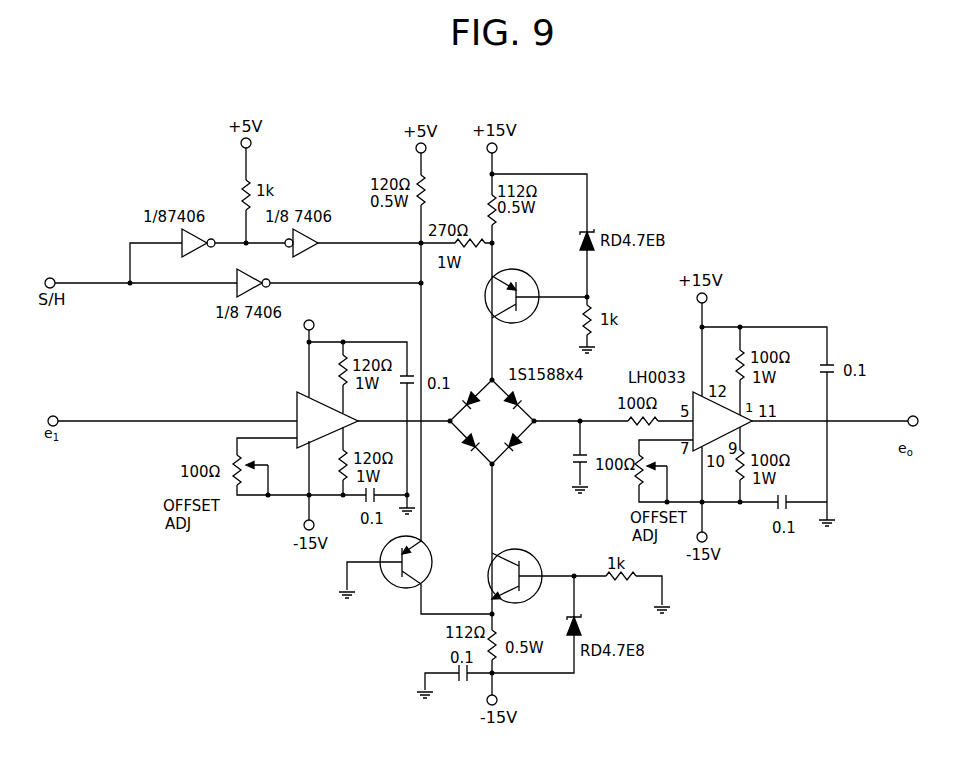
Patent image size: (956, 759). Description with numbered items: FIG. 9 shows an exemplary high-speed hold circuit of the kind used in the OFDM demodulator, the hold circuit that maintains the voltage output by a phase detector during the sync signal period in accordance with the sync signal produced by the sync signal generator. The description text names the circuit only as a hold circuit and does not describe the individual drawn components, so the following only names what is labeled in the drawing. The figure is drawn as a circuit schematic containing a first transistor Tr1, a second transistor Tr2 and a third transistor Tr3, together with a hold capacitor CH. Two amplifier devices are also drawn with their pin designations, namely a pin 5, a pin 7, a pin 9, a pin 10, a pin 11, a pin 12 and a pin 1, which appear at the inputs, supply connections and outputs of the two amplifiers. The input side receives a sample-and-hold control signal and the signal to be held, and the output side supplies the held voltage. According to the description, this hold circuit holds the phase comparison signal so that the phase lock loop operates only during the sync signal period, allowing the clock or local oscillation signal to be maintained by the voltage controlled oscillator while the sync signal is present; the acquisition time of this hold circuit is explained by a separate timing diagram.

The transistor 2SA571 Tr1 is at (536, 296).
The transistor 2SC97A Tr2 is at (547, 578).
The transistor 2SA571 Tr3 is at (411, 584).
The hold capacitor 1000p CH is at (551, 456).
The LH0033 pin 5 (non-inverting input) 5 is at (310, 417).
The LH0033 pin 7 (offset adjust) 7 is at (288, 435).
The LH0033 pin 9 is at (356, 435).
The LH0033 pin 10 (negative supply) 10 is at (324, 457).
The LH0033 pin 11 (output) 11 is at (374, 409).
The LH0033 pin 12 (positive supply) 12 is at (327, 389).
The LH0033 pin 1 is at (351, 404).